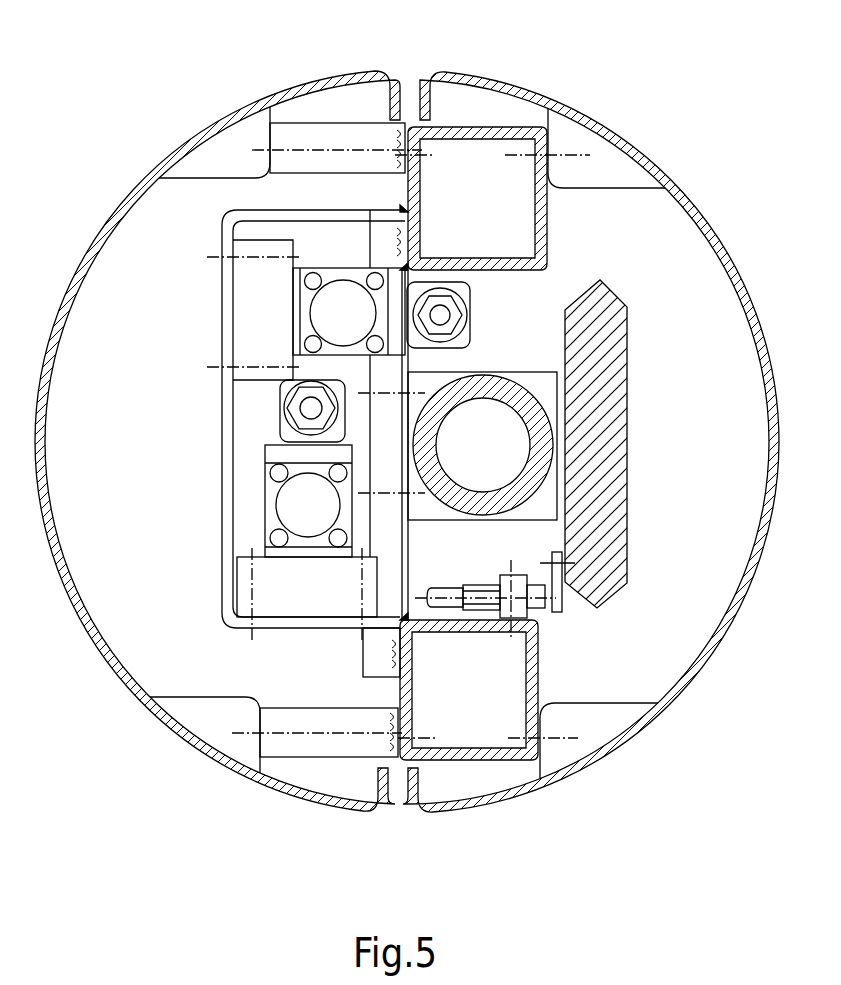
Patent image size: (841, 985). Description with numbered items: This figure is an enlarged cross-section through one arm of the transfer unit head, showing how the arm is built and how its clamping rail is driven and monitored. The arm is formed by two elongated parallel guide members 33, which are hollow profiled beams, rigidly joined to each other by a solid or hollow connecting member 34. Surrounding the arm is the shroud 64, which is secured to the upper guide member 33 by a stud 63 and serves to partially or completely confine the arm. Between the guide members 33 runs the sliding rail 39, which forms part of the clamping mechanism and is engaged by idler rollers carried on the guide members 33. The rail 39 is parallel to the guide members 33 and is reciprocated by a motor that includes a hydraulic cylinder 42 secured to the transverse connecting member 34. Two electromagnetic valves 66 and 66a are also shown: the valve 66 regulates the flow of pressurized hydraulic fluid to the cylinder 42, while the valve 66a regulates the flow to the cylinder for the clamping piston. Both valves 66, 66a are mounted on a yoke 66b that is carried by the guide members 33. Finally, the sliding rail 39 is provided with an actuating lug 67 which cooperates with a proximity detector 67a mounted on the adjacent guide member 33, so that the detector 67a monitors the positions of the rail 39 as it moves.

The guide member 33 is at (543, 207).
The connecting member 34 is at (390, 572).
The sliding rail 39 is at (603, 463).
The hydraulic cylinder 42 is at (497, 392).
The stud 63 is at (317, 138).
The shroud 64 is at (47, 367).
The electromagnetic valve 66 is at (310, 315).
The electromagnetic valve 66a is at (300, 505).
The yoke 66b is at (226, 430).
The actuating lug 67 is at (563, 598).
The proximity detector 67a is at (535, 602).